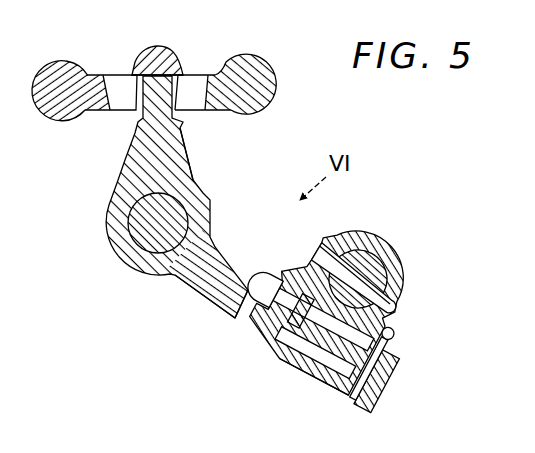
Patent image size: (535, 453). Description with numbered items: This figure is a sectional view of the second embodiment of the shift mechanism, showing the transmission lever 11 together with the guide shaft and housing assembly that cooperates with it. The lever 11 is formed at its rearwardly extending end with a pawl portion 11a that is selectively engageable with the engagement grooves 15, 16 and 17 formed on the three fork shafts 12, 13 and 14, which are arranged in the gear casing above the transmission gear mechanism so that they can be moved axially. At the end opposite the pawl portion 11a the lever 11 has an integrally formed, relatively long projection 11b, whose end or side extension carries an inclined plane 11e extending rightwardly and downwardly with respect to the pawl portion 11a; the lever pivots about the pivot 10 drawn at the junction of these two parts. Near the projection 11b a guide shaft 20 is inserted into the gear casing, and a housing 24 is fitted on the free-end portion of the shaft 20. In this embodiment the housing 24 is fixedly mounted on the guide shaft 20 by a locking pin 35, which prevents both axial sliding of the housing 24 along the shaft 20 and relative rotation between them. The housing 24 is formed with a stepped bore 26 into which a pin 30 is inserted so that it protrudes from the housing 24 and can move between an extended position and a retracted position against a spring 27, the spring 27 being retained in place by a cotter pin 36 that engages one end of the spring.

The pivot pin 10 is at (132, 228).
The transmission lever 11 is at (178, 218).
The pawl portion 11a is at (180, 148).
The projection 11b is at (205, 288).
The inclined plane 11e is at (248, 312).
The fork shaft 12 is at (252, 60).
The fork shaft 13 is at (170, 55).
The fork shaft 14 is at (60, 67).
The engagement groove 15 is at (199, 82).
The engagement groove 16 is at (152, 76).
The engagement groove 17 is at (115, 77).
The guide shaft 20 is at (403, 262).
The housing 24 is at (378, 245).
The stepped bore 26 is at (373, 390).
The spring 27 is at (308, 370).
The pin 30 is at (263, 278).
The locking pin 35 is at (398, 308).
The cotter pin 36 is at (387, 372).